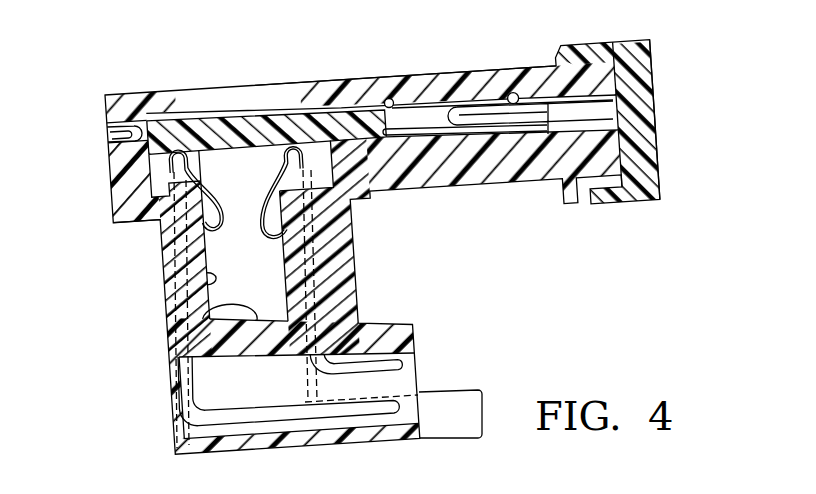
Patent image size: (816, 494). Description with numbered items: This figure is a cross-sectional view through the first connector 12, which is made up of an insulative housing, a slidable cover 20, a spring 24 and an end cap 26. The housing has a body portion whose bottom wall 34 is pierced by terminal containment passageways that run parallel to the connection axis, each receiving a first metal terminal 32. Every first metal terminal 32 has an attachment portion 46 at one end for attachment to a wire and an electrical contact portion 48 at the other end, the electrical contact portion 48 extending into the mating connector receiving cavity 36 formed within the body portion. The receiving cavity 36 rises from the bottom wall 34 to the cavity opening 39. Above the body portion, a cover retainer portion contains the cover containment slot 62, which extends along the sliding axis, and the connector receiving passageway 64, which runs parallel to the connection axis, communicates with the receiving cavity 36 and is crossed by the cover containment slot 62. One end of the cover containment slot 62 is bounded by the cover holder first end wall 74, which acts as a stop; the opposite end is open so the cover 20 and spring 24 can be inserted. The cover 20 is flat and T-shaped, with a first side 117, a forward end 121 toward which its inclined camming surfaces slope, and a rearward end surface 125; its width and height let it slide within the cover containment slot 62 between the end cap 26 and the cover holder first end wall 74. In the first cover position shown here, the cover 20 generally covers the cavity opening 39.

The first connector 12 is at (668, 141).
The slidable cover 20 is at (180, 120).
The spring 24 is at (425, 128).
The end cap 26 is at (654, 88).
The first metal terminal 32 is at (165, 269).
The bottom wall 34 is at (190, 337).
The mating connector receiving cavity 36 is at (205, 280).
The cavity opening 39 is at (207, 150).
The attachment portion 46 is at (388, 405).
The electrical contact portion 48 is at (239, 150).
The cover containment slot 62 is at (513, 96).
The connector receiving passageway 64 is at (312, 92).
The cover holder first end wall 74 is at (136, 128).
The first side 117 is at (272, 150).
The forward end 121 is at (111, 170).
The rearward end surface 125 is at (389, 100).